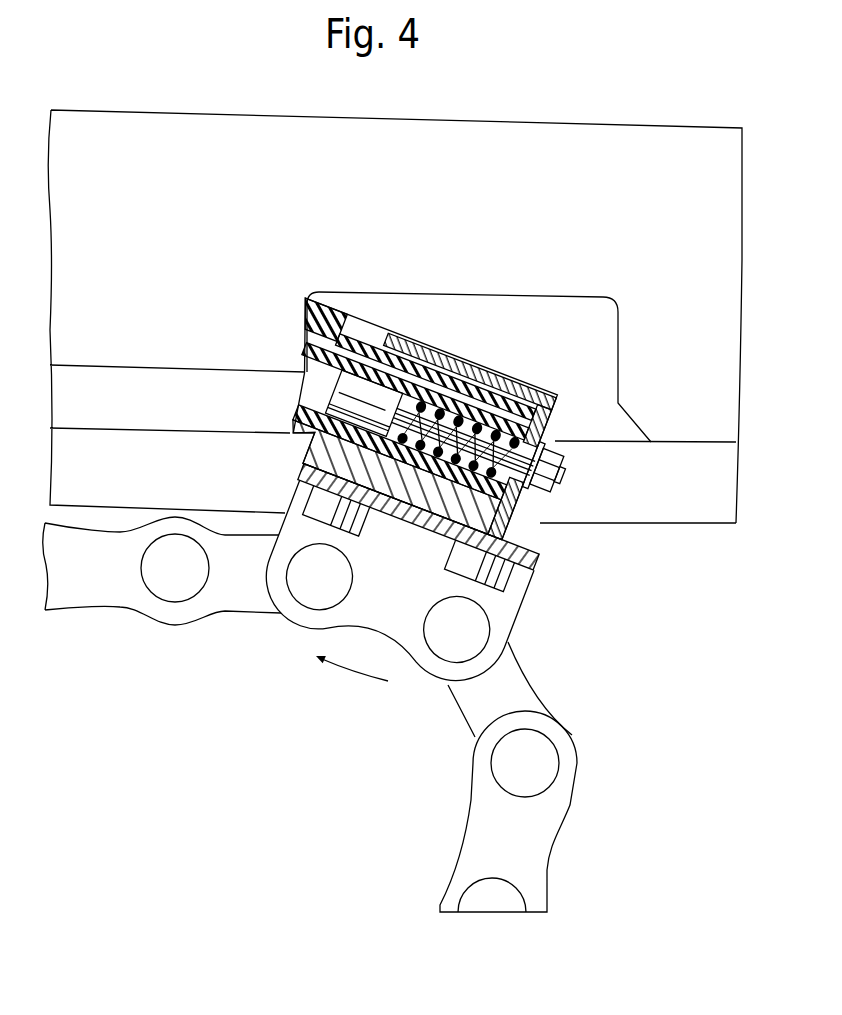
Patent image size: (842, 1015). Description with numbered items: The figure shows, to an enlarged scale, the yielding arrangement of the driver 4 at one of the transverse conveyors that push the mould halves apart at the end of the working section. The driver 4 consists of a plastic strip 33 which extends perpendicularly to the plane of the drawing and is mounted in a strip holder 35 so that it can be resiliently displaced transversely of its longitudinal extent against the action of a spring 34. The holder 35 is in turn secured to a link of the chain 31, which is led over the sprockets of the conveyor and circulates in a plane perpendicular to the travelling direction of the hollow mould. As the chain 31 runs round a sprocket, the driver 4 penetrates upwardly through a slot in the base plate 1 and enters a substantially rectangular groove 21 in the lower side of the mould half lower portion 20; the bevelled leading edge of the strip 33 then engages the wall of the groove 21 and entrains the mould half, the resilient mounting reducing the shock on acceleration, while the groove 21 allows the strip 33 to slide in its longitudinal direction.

The base plate 1 is at (647, 507).
The driver 4 is at (348, 307).
The mould half lower portion 20 is at (585, 120).
The groove 21 is at (524, 308).
The chain 31 is at (567, 777).
The plastic strip 33 is at (320, 331).
The spring 34 is at (503, 420).
The strip holder 35 is at (553, 422).